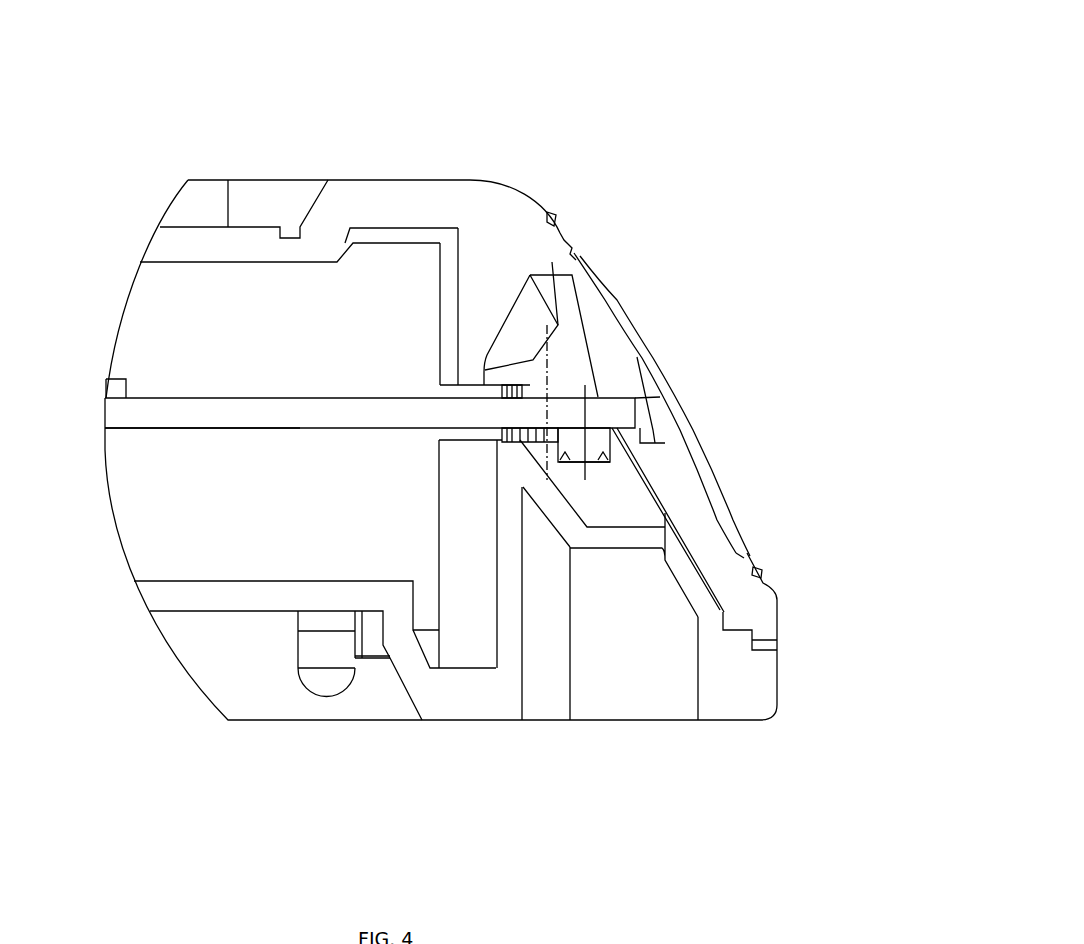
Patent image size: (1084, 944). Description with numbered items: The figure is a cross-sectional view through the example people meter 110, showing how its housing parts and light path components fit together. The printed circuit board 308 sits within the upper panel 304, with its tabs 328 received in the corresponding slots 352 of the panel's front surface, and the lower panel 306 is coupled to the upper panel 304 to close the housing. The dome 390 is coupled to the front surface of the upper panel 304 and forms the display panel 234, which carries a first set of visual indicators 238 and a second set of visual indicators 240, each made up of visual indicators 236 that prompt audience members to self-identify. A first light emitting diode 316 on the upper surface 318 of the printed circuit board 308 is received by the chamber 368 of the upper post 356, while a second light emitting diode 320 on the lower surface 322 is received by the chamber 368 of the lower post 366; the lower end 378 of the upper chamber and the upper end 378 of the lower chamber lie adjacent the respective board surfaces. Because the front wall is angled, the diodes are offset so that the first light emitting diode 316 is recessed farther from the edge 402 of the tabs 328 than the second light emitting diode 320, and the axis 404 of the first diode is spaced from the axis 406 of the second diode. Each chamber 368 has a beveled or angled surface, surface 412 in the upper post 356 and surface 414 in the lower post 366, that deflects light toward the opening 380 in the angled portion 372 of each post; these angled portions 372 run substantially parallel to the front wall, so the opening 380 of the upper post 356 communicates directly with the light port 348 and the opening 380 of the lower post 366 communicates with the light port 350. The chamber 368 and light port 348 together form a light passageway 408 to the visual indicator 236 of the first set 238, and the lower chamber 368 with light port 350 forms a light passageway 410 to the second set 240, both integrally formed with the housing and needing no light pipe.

The people meter 110 is at (660, 63).
The upper panel 304 is at (500, 178).
The lower panel 306 is at (770, 710).
The printed circuit board 308 is at (122, 412).
The upper surface 318 is at (188, 396).
The lower surface 322 is at (262, 430).
The first light emitting diode 316 is at (530, 394).
The end of chamber 378 is at (522, 388).
The second light emitting diode 320 is at (567, 442).
The angled surface 414 is at (547, 460).
The axis of second light emitting diode 406 is at (560, 472).
The lower post 366 is at (497, 572).
The angled portion 372 is at (553, 322).
The light port 348 is at (585, 315).
The upper post 356 is at (540, 345).
The axis of first light emitting diode 404 is at (487, 352).
The angled surface 412 is at (500, 372).
The opening 380 is at (567, 340).
The dome 390 is at (575, 257).
The first set of visual indicators 238 is at (608, 270).
The display panel 234 is at (716, 252).
The light passageway 408 is at (588, 332).
The visual indicator 236 is at (632, 328).
The chamber 368 is at (565, 352).
The edge 402 is at (655, 403).
The tab 328 is at (656, 428).
The slot 352 is at (622, 418).
The light passageway 410 is at (666, 484).
The light port 350 is at (685, 502).
The second set of visual indicators 240 is at (757, 493).